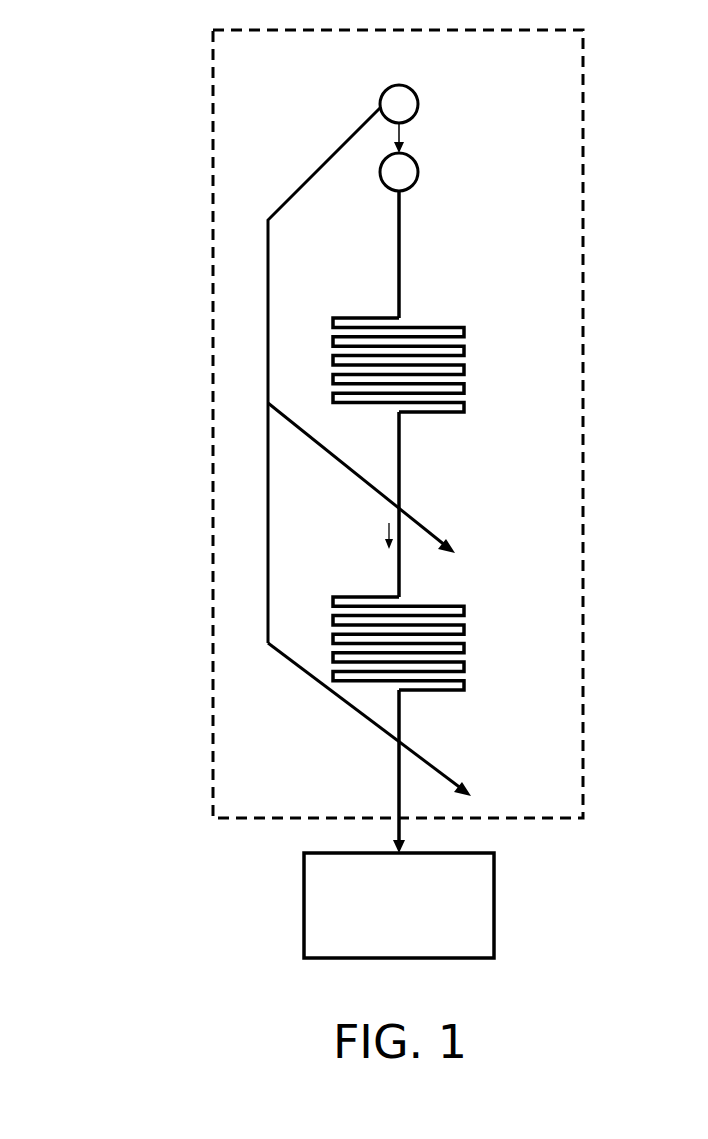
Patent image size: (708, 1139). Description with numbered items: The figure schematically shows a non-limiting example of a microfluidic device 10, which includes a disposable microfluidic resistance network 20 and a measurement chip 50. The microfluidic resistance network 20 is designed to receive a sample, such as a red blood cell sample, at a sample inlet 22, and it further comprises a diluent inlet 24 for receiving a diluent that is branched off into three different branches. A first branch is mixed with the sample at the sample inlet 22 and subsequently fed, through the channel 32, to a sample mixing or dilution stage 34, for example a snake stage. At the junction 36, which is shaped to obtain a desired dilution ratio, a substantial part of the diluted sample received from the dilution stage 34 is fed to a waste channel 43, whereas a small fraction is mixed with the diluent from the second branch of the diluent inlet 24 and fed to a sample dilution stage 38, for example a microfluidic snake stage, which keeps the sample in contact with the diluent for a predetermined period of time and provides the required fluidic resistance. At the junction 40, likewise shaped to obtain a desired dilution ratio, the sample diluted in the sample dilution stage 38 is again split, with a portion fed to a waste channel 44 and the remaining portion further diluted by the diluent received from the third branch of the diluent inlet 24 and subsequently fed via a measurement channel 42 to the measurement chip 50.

The microfluidic device 10 is at (130, 78).
The microfluidic resistance network 20 is at (213, 420).
The sample inlet 22 is at (419, 172).
The diluent inlet 24 is at (419, 104).
The inlet conduit 32 is at (401, 259).
The sample mixing or dilution stage 34 is at (424, 326).
The junction 36 is at (401, 512).
The sample dilution stage 38 is at (424, 605).
The junction 40 is at (401, 745).
The measurement channel 42 is at (397, 780).
The waste channel 43 is at (437, 535).
The waste channel 44 is at (437, 772).
The measurement chip 50 is at (385, 917).